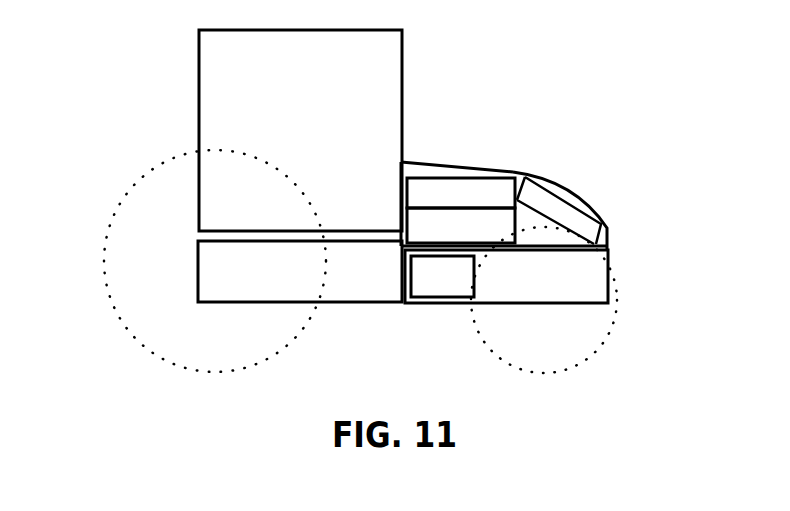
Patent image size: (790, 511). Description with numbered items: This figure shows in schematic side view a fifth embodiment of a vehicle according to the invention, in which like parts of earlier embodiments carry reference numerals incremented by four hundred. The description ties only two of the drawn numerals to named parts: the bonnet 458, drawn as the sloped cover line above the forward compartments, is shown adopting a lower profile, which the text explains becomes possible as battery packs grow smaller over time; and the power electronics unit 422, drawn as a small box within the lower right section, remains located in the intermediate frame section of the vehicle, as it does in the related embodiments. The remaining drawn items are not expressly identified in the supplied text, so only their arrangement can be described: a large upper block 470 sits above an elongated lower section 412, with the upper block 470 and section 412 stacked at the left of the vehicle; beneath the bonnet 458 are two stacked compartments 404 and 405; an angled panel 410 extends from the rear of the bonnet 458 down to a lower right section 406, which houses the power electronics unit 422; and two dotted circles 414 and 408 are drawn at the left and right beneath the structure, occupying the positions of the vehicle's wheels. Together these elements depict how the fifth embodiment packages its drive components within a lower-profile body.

The main housing / upper box 470 is at (303, 88).
The lower left housing section 412 is at (380, 288).
The bonnet 458 is at (447, 164).
The upper inner compartment 404 is at (488, 192).
The lower inner compartment 405 is at (430, 240).
The angled panel 410 is at (580, 207).
The lower right housing section 406 is at (558, 291).
The power electronics unit 422 is at (458, 289).
The left circular zone (dotted) 414 is at (124, 305).
The right circular zone (dotted) 408 is at (597, 323).